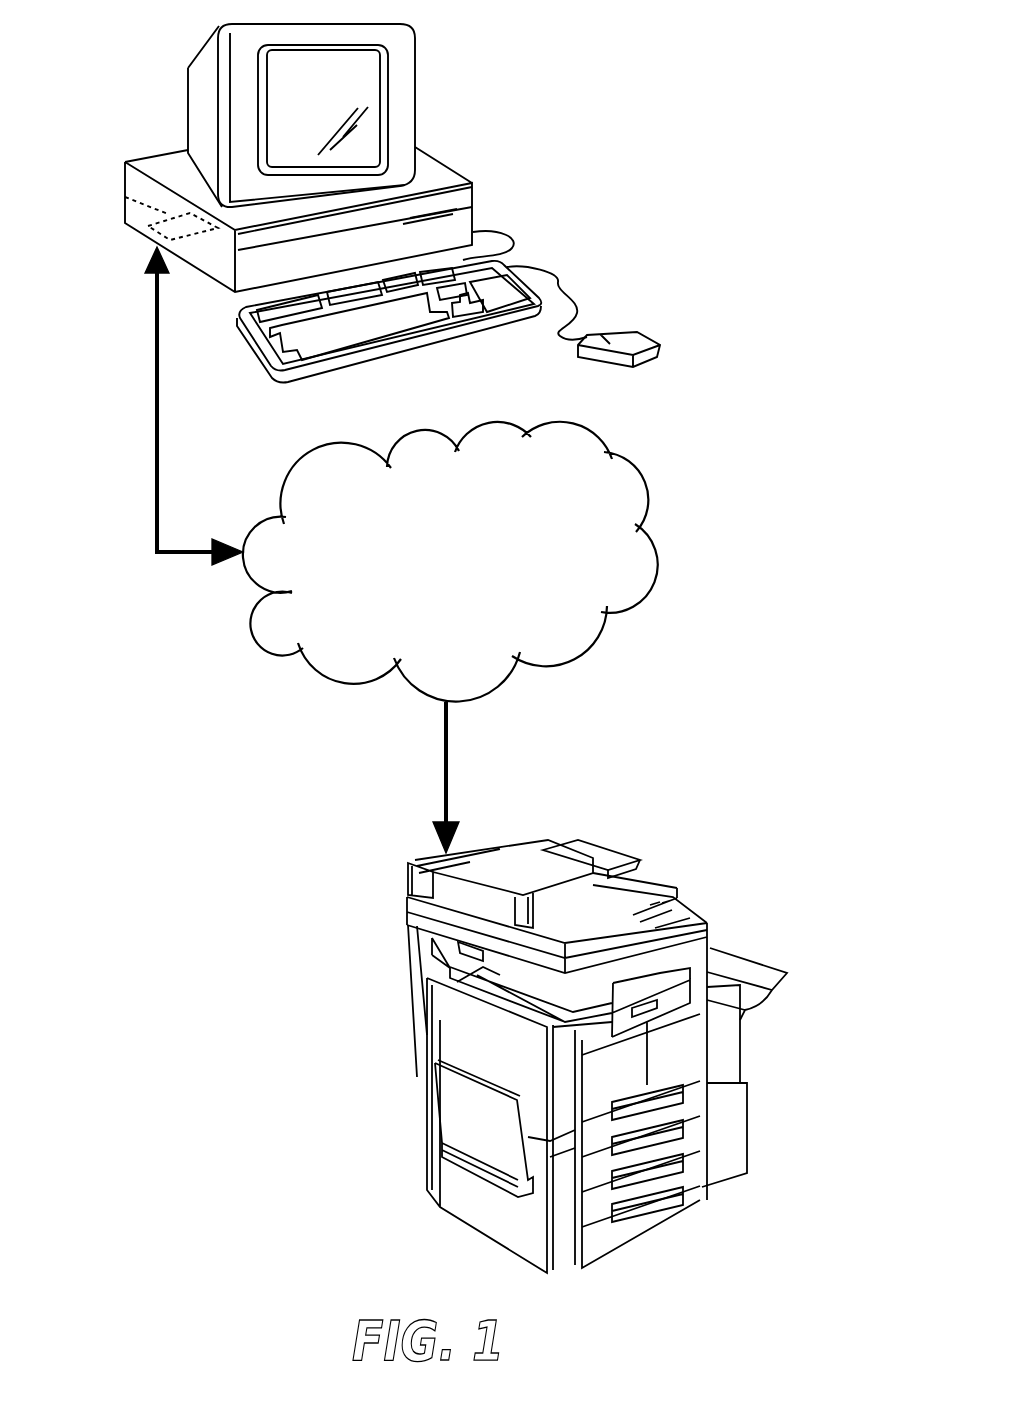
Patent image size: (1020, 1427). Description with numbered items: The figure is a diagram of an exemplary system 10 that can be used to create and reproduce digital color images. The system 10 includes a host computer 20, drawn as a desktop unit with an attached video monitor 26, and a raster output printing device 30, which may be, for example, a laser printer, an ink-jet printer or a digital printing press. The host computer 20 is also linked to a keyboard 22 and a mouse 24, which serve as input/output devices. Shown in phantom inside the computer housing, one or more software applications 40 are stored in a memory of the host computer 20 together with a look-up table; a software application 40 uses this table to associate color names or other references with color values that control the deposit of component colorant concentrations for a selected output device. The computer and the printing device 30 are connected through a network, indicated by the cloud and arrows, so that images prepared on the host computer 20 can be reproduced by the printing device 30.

The system 10 is at (817, 98).
The host computer 20 is at (487, 190).
The keyboard 22 is at (365, 325).
The mouse 24 is at (607, 330).
The video monitor 26 is at (372, 87).
The raster output printing device 30 is at (387, 810).
The software application 40 is at (125, 197).